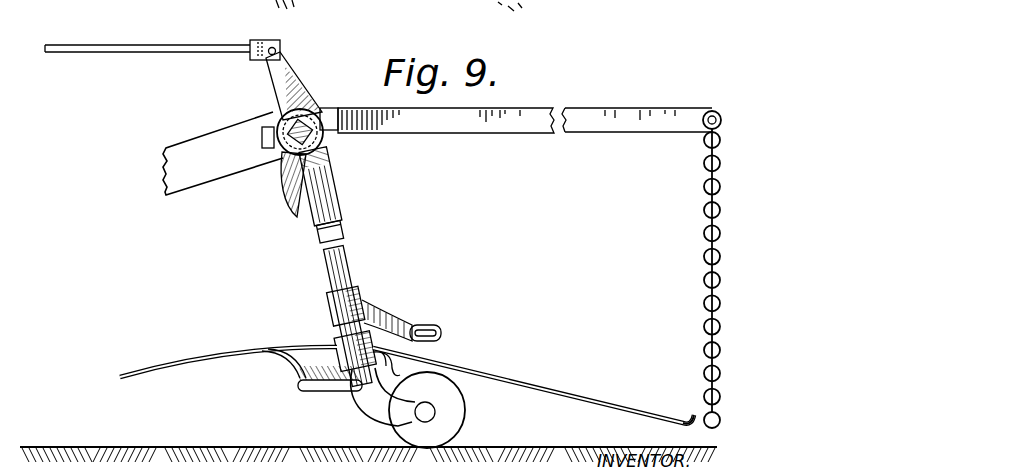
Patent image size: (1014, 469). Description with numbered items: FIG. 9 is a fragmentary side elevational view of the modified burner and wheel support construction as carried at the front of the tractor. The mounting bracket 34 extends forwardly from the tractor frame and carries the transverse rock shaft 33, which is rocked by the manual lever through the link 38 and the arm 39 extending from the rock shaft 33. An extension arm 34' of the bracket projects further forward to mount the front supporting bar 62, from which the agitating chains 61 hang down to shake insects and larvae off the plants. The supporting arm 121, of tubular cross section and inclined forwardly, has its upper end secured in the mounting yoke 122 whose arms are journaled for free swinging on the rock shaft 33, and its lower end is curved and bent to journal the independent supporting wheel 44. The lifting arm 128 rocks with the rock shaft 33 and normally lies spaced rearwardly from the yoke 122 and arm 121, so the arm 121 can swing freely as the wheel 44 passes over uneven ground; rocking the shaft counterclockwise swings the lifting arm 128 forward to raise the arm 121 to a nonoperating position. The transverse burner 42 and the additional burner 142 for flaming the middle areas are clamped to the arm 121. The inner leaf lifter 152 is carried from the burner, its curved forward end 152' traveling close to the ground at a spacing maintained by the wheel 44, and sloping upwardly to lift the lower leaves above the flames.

The link 38 is at (100, 45).
The arm 39 is at (268, 85).
The rock shaft 33 is at (303, 122).
The mounting bracket 34 is at (223, 167).
The extension arm 34' is at (516, 139).
The lifting arm 128 is at (284, 203).
The mounting yoke 122 is at (330, 183).
The supporting arm 121 is at (341, 254).
The additional burner 142 is at (398, 318).
The burner 42 is at (297, 388).
The supporting wheel 44 is at (455, 415).
The inner leaf lifter 152 is at (533, 381).
The curved forward end of inner leaf lifter 152' is at (649, 430).
The chain 61 is at (703, 241).
The front supporting bar 62 is at (707, 110).